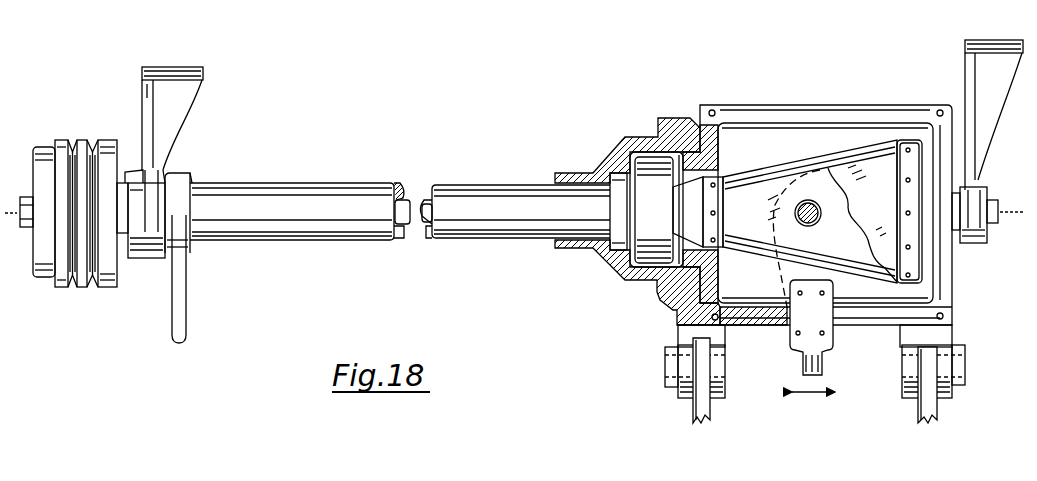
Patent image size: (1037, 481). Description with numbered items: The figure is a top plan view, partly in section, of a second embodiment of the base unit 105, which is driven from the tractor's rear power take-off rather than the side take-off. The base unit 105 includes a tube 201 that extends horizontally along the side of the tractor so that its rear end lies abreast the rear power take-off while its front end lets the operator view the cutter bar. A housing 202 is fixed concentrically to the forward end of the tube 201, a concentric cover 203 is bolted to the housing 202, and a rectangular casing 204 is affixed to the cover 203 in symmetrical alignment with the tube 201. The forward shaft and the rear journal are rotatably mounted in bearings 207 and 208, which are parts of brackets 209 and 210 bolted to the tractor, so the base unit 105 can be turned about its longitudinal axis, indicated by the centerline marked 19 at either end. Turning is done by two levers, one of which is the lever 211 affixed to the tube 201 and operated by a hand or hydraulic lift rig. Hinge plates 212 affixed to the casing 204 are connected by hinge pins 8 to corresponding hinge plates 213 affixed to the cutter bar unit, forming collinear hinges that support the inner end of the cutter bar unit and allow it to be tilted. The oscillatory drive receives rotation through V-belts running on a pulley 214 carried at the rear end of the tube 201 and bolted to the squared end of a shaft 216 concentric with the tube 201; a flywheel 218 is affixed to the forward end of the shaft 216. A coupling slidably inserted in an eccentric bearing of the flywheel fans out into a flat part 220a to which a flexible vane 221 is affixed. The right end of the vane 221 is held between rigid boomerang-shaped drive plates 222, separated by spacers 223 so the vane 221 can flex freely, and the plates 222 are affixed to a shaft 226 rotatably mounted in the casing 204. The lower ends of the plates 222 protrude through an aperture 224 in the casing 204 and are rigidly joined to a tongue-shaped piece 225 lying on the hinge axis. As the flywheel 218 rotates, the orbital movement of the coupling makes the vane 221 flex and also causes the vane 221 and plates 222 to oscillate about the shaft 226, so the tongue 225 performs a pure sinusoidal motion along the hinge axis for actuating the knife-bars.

The hinge pins 8 is at (665, 362).
The axis line 19 is at (5, 220).
The base unit 105 is at (345, 181).
The tube 201 is at (467, 184).
The housing 202 is at (588, 250).
The cover 203 is at (670, 303).
The casing 204 is at (725, 310).
The bearing 207 is at (975, 243).
The bearing 208 is at (147, 258).
The bracket 209 is at (983, 113).
The bracket 210 is at (190, 104).
The lever 211 is at (184, 318).
The hinge plates 212 is at (678, 397).
The hinge plates 213 is at (712, 415).
The pulley 214 is at (85, 280).
The shaft 216 is at (426, 226).
The flywheel 218 is at (652, 233).
The flat part 220a is at (680, 200).
The flexible vane 221 is at (757, 237).
The drive plates 222 is at (810, 277).
The spacers 223 is at (905, 193).
The aperture 224 is at (837, 318).
The tongue-shaped piece 225 is at (822, 367).
The shaft 226 is at (806, 200).